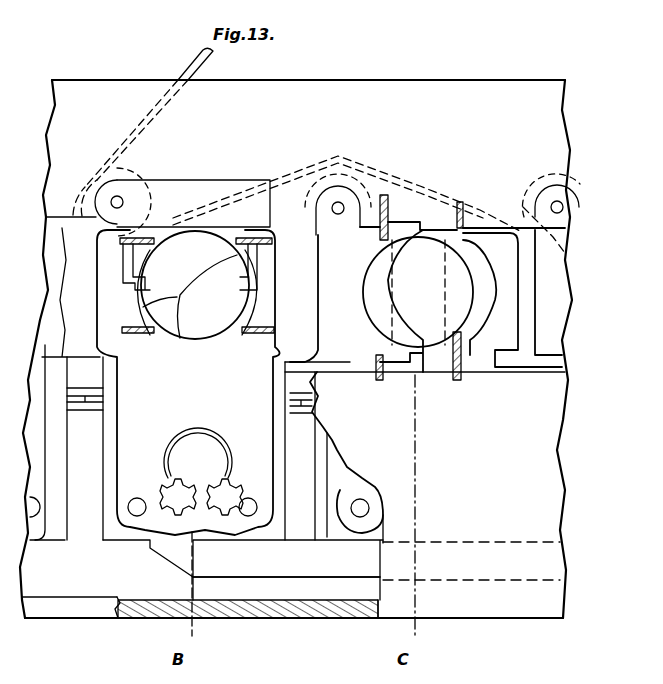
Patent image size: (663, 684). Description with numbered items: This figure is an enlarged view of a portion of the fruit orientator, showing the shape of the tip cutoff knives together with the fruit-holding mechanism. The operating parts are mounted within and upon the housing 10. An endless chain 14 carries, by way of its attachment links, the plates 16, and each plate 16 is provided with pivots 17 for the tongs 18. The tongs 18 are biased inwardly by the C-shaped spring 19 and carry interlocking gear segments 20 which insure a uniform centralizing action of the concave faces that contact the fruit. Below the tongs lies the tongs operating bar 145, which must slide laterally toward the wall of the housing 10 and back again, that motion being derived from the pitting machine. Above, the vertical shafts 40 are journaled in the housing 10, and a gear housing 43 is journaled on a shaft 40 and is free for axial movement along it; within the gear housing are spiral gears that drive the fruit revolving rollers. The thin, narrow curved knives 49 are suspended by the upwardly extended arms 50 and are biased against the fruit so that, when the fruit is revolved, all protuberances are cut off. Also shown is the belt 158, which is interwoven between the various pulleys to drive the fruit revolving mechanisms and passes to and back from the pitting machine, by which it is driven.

The housing 10 is at (355, 81).
The endless chain 14 is at (88, 406).
The plate 16 is at (323, 473).
The pivot 17 is at (128, 508).
The tong 18 is at (139, 455).
The C-shaped spring 19 is at (207, 418).
The interlocking gear segment 20 is at (176, 506).
The vertical shaft 40 is at (120, 199).
The gear housing 43 is at (343, 185).
The curved knife 49 is at (181, 339).
The upwardly extended arm 50 is at (125, 243).
The tongs operating bar 145 is at (340, 569).
The belt 158 is at (198, 58).